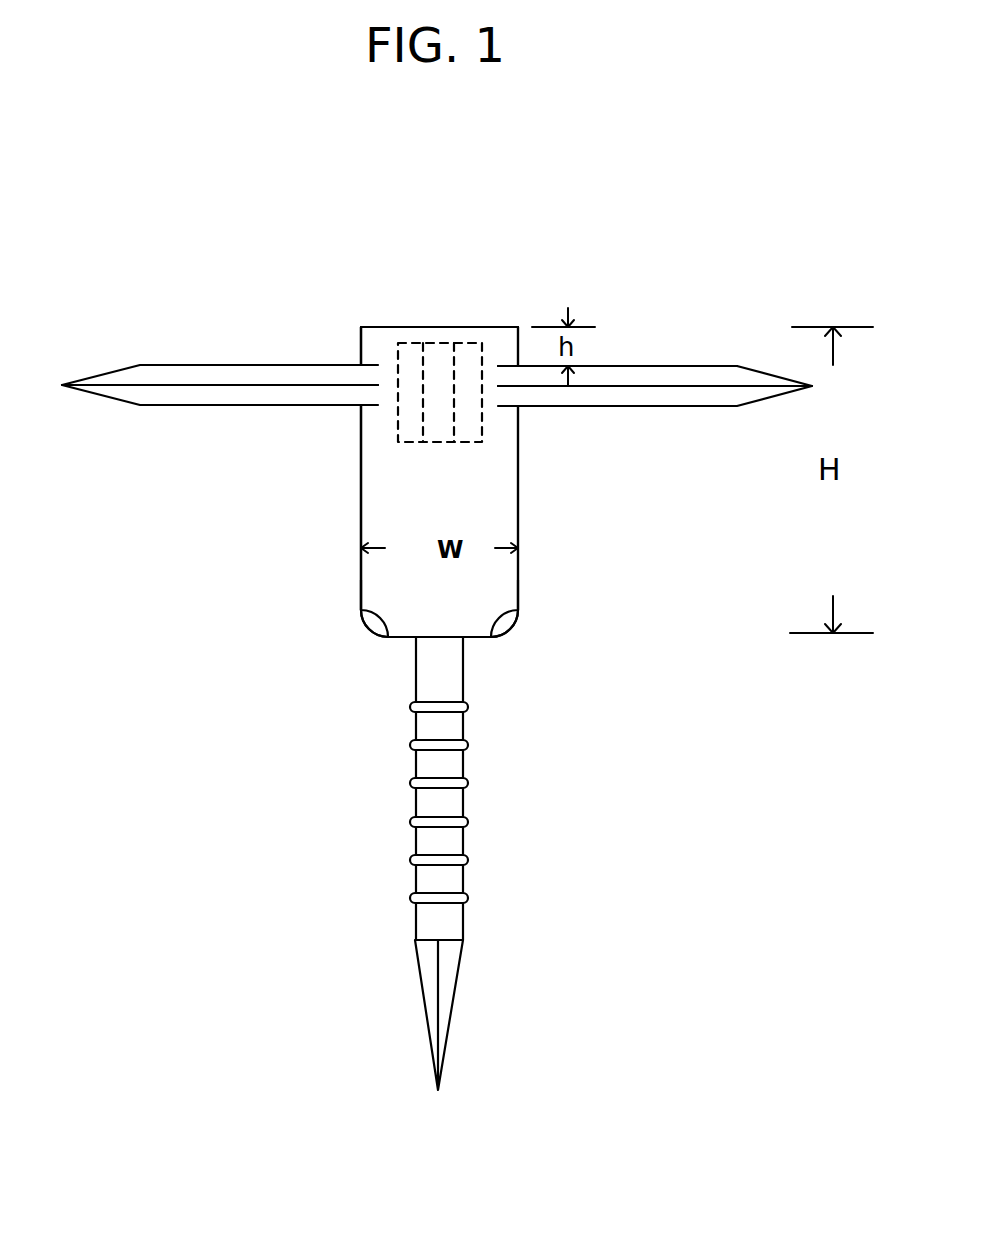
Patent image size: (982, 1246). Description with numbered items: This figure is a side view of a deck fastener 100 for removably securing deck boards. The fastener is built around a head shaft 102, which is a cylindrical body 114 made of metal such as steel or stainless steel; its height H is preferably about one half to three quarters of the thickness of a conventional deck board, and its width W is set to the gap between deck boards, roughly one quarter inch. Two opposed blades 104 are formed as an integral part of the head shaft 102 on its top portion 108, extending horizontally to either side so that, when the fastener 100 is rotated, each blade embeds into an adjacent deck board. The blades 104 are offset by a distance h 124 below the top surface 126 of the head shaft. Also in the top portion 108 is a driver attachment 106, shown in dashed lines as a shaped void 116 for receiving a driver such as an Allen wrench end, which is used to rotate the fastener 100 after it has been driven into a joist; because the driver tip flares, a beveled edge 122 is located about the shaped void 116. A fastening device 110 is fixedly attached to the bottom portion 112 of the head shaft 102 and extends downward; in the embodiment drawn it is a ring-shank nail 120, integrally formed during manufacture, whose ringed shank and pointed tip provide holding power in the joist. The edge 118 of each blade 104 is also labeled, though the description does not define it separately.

The deck fastener 100 is at (660, 226).
The head shaft 102 is at (580, 558).
The blades 104 is at (255, 365).
The driver attachment 106 is at (507, 298).
The top portion 108 is at (350, 337).
The fastening device 110 is at (407, 863).
The bottom portion 112 is at (325, 658).
The cylindrical body 114 is at (359, 537).
The shaped void 116 is at (437, 387).
The blade edge 118 is at (267, 393).
The ring-shank nail 120 is at (416, 842).
The beveled edge 122 is at (402, 335).
The distance h 124 is at (584, 351).
The top surface 126 is at (376, 327).